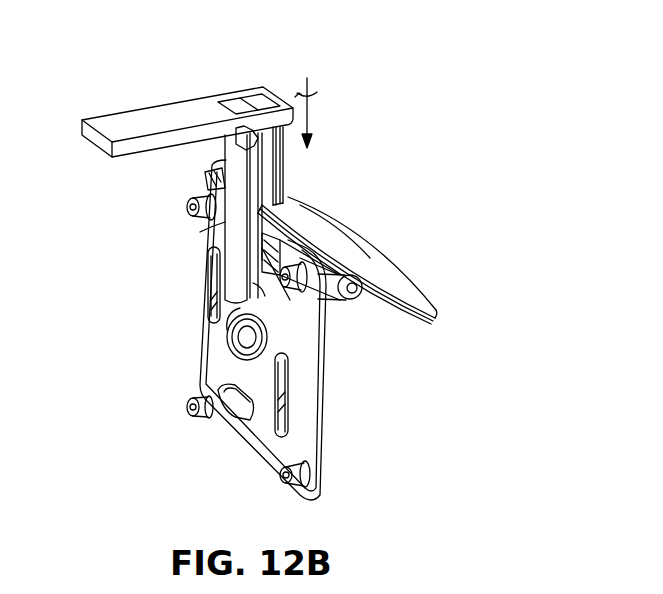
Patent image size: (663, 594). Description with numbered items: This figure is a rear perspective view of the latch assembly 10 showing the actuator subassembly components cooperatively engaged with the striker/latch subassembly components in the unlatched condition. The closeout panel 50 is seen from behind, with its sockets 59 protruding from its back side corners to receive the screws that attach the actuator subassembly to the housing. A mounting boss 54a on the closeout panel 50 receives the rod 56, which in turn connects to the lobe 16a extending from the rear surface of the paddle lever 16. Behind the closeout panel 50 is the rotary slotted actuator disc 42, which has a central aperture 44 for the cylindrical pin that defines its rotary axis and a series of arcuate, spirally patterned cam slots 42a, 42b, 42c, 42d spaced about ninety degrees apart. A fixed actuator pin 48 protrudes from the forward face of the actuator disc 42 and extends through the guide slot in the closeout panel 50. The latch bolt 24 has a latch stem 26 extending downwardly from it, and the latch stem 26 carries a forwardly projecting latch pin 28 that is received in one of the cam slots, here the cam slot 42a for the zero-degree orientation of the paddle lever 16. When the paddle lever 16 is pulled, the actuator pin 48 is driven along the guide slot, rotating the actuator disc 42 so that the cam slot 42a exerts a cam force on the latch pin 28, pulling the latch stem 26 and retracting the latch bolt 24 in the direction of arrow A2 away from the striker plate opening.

The latch assembly 10 is at (397, 167).
The paddle lever 16 is at (376, 260).
The lobe 16a is at (370, 258).
The latch bolt 24 is at (255, 104).
The latch stem 26 is at (235, 158).
The latch pin 28 is at (285, 240).
The rotary slotted actuator disc 42 is at (293, 346).
The cam slot 42a is at (258, 290).
The cam slot 42b is at (283, 400).
The cam slot 42c is at (234, 420).
The cam slot 42d is at (210, 275).
The central aperture 44 is at (236, 350).
The actuator pin 48 is at (327, 307).
The closeout panel 50 is at (323, 436).
The mounting boss 54a is at (332, 294).
The rod 56 is at (400, 283).
The socket 59 is at (200, 213).
The arrow A2 is at (318, 93).